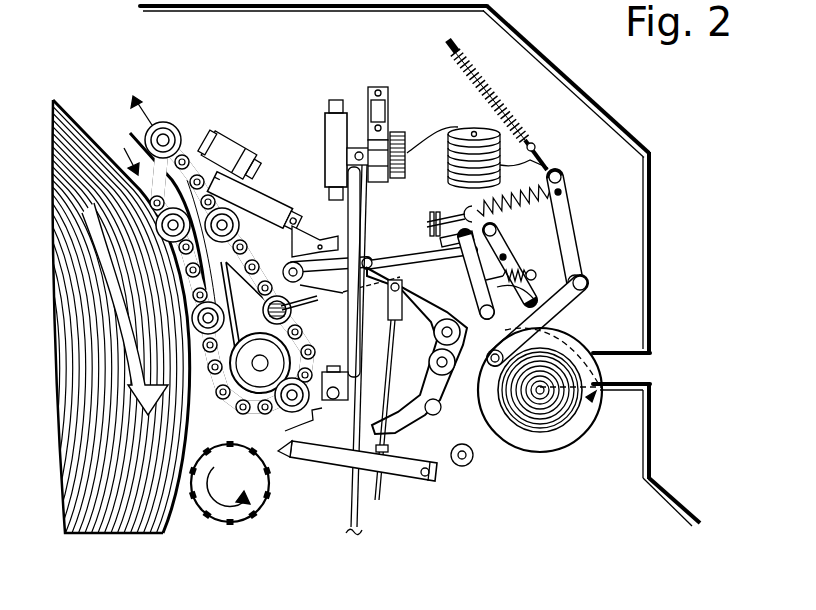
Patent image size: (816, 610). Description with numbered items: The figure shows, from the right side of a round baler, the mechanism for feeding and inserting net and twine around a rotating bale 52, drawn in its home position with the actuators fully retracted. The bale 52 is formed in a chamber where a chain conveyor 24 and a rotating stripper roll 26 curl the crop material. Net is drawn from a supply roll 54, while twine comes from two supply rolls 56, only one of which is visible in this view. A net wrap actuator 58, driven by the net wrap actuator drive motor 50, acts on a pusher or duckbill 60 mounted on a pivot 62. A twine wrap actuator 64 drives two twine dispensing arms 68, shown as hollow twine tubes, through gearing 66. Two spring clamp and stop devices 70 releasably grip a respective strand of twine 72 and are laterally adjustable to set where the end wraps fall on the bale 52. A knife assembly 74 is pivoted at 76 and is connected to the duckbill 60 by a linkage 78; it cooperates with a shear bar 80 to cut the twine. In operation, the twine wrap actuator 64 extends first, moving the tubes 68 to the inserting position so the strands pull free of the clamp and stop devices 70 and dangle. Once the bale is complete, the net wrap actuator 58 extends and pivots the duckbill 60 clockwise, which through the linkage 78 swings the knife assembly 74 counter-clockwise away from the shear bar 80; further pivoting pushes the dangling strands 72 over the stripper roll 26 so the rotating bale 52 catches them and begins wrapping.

The chain conveyor 24 is at (182, 145).
The rotating stripper roll 26 is at (234, 522).
The net wrap actuator drive motor 50 is at (237, 150).
The rotating bale 52 is at (85, 120).
The supply roll 54 is at (569, 432).
The supply rolls 56 is at (522, 163).
The net wrap actuator 58 is at (255, 200).
The pusher or duckbill 60 is at (452, 390).
The pivot 62 is at (340, 258).
The twine wrap actuator 64 is at (330, 127).
The gearing 66 is at (393, 132).
The twine dispensing arms 68 is at (368, 262).
The spring clamp and stop devices 70 is at (337, 402).
The strand of twine 72 is at (356, 510).
The knife assembly 74 is at (324, 461).
The pivot 76 is at (438, 478).
The linkage 78 is at (398, 325).
The shear bar 80 is at (312, 420).